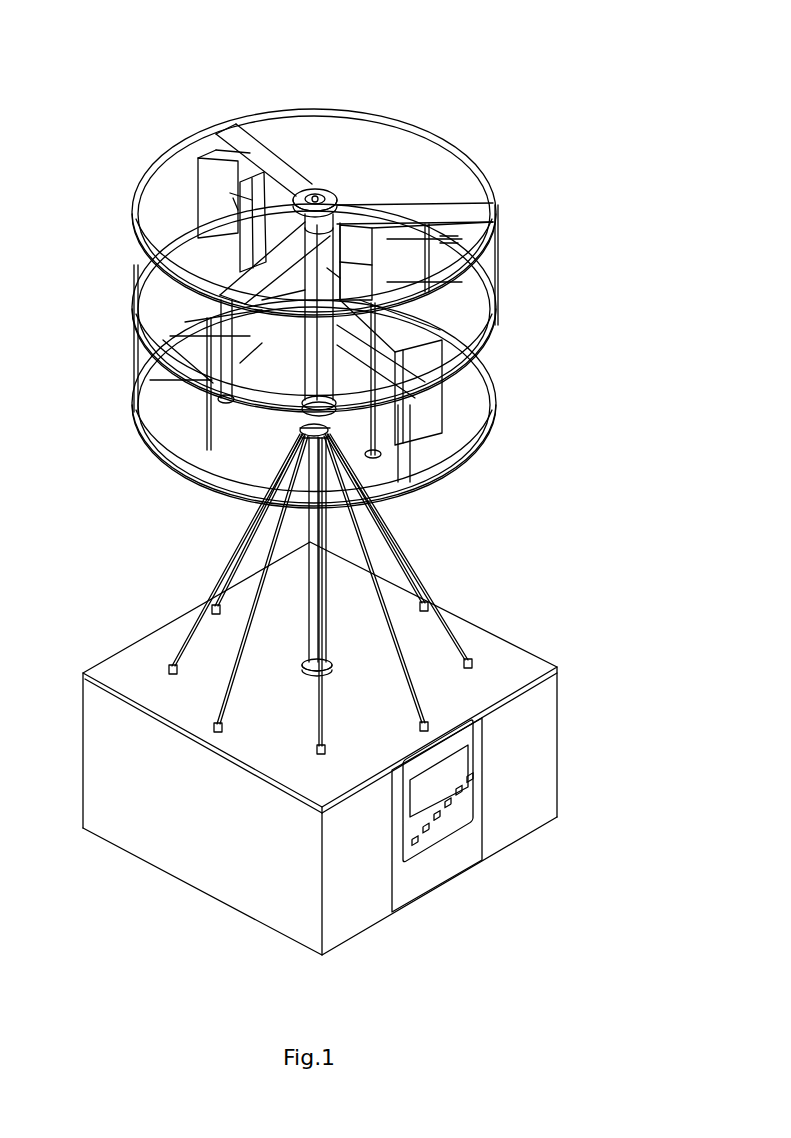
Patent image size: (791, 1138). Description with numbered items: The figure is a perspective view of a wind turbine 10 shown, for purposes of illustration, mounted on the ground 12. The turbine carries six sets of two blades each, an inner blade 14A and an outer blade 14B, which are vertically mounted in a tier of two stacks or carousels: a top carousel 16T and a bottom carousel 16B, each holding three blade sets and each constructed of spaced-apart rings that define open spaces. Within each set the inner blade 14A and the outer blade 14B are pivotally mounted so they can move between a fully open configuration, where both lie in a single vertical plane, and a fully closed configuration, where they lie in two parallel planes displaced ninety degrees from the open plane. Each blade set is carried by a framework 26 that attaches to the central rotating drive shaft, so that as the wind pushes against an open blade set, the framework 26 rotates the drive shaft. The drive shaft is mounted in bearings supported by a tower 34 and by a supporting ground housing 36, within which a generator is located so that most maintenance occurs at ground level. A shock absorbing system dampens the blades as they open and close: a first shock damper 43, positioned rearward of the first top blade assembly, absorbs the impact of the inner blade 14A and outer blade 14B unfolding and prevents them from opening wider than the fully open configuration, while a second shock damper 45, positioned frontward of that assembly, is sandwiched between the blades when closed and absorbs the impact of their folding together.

The wind turbine 10 is at (610, 92).
The ground 12 is at (634, 919).
The inner blade 14A is at (255, 212).
The outer blade 14B is at (212, 173).
The top carousel 16T is at (540, 268).
The bottom carousel 16B is at (530, 396).
The framework 26 is at (245, 147).
The tower 34 is at (460, 561).
The supporting ground housing 36 is at (543, 733).
The first shock damper 43 is at (152, 207).
The second shock damper 45 is at (448, 237).